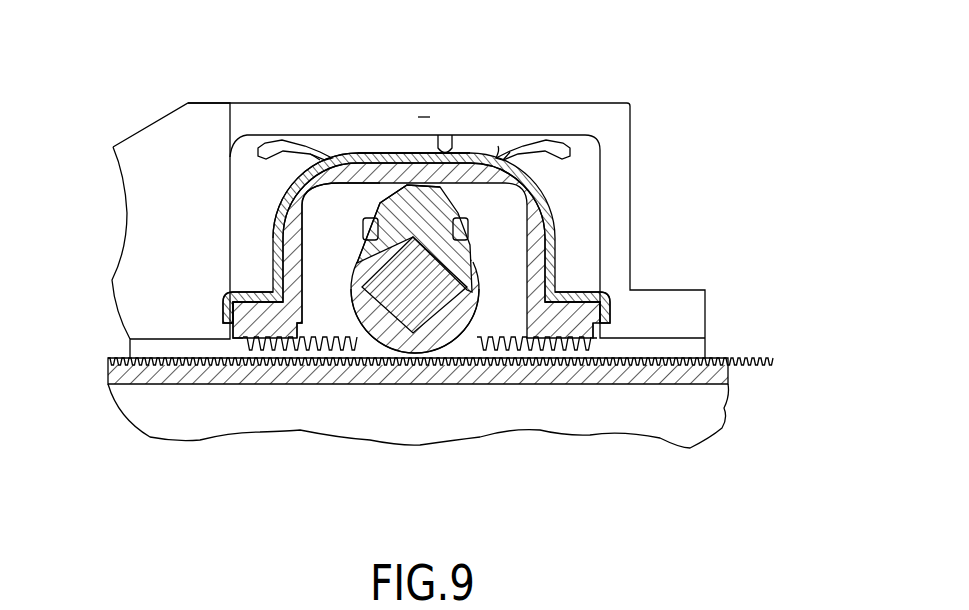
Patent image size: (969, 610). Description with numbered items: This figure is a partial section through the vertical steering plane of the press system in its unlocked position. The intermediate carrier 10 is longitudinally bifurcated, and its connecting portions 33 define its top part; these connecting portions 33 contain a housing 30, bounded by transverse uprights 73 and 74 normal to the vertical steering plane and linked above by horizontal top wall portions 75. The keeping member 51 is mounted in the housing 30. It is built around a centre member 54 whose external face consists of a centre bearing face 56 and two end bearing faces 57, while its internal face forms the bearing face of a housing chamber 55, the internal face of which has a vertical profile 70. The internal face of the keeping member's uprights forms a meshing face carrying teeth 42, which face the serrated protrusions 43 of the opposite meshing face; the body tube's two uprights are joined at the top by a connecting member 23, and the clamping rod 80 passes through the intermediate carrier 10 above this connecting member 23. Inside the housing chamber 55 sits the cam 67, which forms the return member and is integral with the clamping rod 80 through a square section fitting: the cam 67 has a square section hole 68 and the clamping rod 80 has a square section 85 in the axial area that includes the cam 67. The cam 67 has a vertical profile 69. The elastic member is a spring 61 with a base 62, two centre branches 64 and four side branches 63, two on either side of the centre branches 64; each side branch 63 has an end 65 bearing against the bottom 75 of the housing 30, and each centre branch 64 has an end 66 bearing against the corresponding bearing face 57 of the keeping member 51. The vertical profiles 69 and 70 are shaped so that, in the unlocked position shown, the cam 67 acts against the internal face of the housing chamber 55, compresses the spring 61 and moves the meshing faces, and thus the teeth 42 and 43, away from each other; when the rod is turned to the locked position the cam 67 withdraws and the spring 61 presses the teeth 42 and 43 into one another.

The intermediate carrier 10 is at (668, 220).
The connecting member 23 is at (652, 372).
The housing 30 is at (443, 143).
The connecting portions 33 is at (597, 117).
The teeth 42 is at (575, 352).
The serrated protrusions 43 is at (712, 358).
The keeping member 51 is at (230, 160).
The centre member 54 is at (465, 183).
The housing chamber 55 is at (337, 237).
The centre bearing face 56 is at (407, 186).
The end bearing faces 57 is at (230, 335).
The spring 61 is at (552, 194).
The base 62 is at (463, 165).
The side branches 63 is at (317, 150).
The centre branches 64 is at (337, 160).
The end 65 is at (273, 142).
The end 66 is at (235, 290).
The cam 67 is at (356, 184).
The square section hole 68 is at (377, 272).
The vertical profile 69 is at (498, 146).
The vertical profile 70 is at (285, 245).
The transverse upright 73 is at (603, 190).
The transverse upright 74 is at (285, 212).
The top wall portions 75 is at (424, 117).
The clamping rod 80 is at (442, 300).
The square section 85 is at (432, 296).